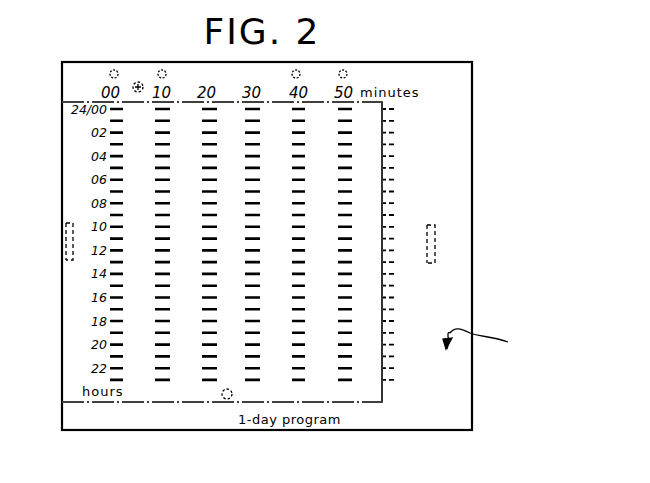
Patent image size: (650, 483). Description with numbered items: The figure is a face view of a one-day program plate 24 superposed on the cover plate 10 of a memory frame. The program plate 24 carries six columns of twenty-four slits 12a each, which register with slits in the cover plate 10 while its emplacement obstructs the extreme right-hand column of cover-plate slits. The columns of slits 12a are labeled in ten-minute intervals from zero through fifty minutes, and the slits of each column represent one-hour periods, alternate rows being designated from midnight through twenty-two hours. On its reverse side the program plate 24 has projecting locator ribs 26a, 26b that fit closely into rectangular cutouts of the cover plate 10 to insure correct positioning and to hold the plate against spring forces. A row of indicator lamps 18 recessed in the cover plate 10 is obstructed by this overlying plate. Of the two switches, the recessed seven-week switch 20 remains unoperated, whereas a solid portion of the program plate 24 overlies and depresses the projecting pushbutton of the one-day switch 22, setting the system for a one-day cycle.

The cover plate 10 is at (447, 400).
The slits 12a is at (292, 177).
The indicator lamps 18 is at (343, 70).
The 7-week switch 20 is at (137, 81).
The 1-day switch 22 is at (230, 401).
The program plate 24 is at (488, 340).
The locator rib 26a is at (68, 237).
The locator rib 26b is at (433, 242).